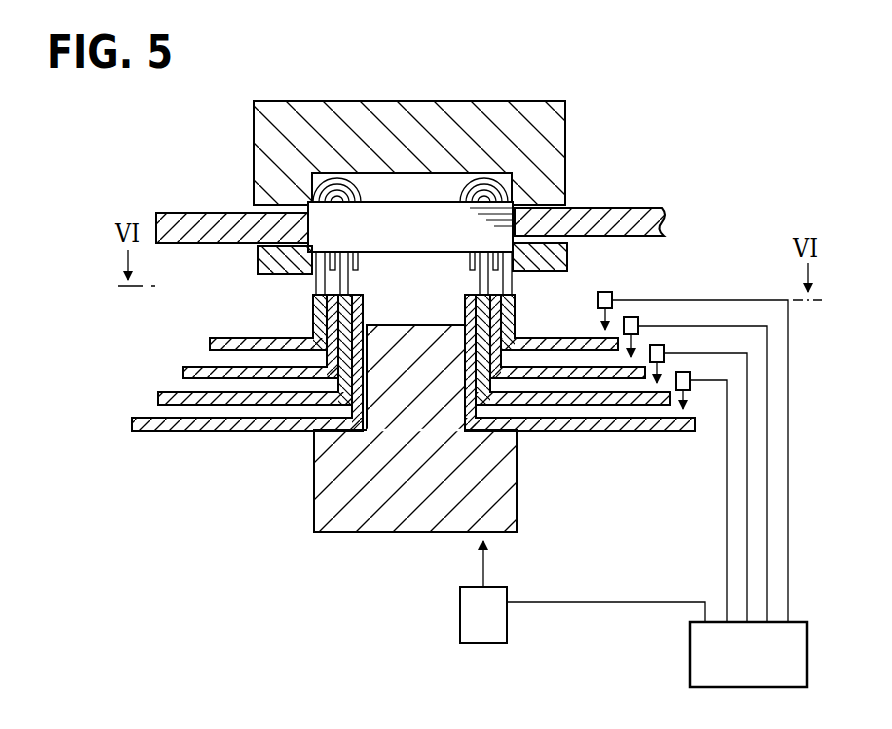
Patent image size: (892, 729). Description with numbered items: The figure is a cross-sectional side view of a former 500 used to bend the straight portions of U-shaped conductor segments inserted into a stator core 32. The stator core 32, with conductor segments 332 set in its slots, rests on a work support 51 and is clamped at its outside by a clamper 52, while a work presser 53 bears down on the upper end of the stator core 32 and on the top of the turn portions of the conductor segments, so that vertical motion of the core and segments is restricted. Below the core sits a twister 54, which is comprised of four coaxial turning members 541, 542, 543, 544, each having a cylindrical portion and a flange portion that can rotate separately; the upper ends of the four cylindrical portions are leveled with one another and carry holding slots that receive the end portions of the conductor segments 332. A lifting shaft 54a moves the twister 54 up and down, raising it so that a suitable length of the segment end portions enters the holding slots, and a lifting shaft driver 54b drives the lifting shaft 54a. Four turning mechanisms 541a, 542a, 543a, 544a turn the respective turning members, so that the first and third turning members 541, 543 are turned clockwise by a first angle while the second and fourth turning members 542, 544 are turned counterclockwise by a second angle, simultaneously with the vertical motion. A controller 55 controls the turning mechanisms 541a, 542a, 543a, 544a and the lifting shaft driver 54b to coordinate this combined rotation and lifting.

The former 500 is at (582, 76).
The work presser 53 is at (500, 110).
The stator core 32 is at (425, 223).
The conductor segments 332 is at (318, 172).
The clamper 52 is at (637, 211).
The work support 51 is at (567, 250).
The twister 54 is at (524, 320).
The lifting shaft 54a is at (342, 474).
The lifting shaft driver 54b is at (475, 612).
The first turning member 541 is at (312, 303).
The second turning member 542 is at (333, 318).
The third turning member 543 is at (343, 335).
The fourth turning member 544 is at (330, 357).
The first turning mechanism 541a is at (612, 292).
The second turning mechanism 542a is at (638, 320).
The third turning mechanism 543a is at (664, 350).
The fourth turning mechanism 544a is at (692, 392).
The controller 55 is at (697, 657).